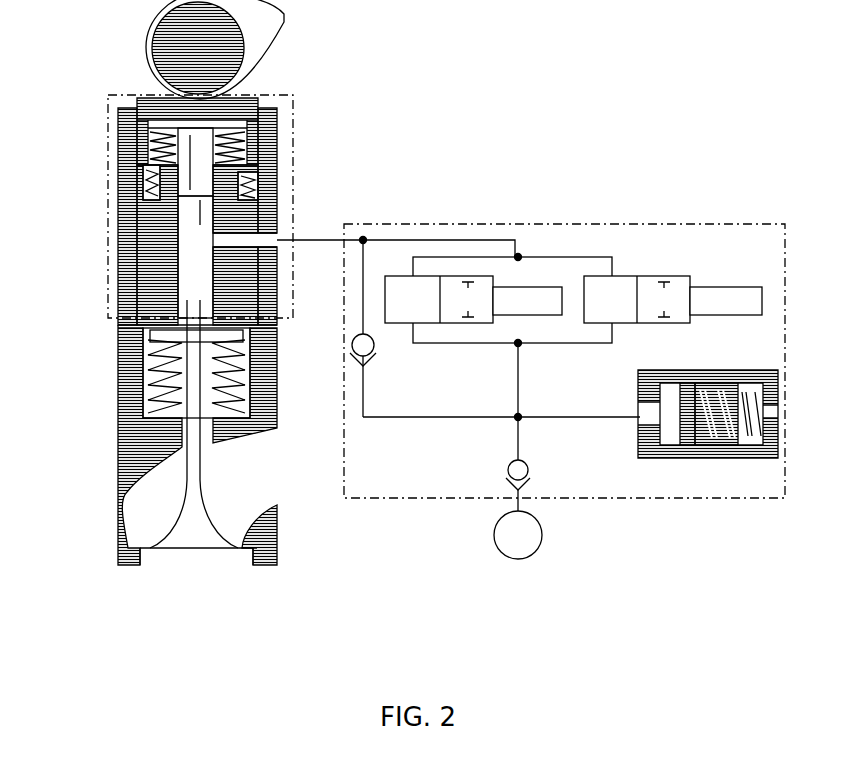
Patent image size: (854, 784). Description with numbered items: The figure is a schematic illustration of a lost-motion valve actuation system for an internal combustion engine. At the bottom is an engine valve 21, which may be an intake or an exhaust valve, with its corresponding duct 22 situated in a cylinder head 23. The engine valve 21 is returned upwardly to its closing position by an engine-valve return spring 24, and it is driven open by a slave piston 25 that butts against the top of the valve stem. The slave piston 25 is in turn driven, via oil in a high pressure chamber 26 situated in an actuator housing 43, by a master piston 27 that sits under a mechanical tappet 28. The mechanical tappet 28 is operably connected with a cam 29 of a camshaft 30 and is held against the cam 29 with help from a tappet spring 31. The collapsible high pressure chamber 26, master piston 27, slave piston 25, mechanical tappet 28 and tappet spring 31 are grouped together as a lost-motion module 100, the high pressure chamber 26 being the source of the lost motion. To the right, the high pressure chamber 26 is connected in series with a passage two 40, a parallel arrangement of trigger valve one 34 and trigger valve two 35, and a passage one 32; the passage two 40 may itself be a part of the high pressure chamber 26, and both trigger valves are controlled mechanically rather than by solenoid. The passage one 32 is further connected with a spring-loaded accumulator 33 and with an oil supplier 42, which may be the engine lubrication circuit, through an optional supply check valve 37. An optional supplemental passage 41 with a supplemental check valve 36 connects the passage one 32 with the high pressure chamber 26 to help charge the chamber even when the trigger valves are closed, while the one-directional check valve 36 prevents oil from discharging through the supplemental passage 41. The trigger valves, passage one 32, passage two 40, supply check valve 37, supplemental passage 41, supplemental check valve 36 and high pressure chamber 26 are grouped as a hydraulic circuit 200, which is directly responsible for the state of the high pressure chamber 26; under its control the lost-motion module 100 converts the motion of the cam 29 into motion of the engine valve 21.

The engine valve 21 is at (188, 556).
The duct 22 is at (272, 497).
The cylinder head 23 is at (140, 452).
The engine-valve return spring 24 is at (148, 406).
The slave piston 25 is at (192, 292).
The high pressure chamber 26 is at (190, 230).
The master piston 27 is at (188, 186).
The mechanical tappet 28 is at (135, 98).
The cam 29 is at (247, 38).
The camshaft 30 is at (172, 35).
The tappet spring 31 is at (155, 145).
The passage one 32 is at (520, 386).
The accumulator 33 is at (702, 367).
The trigger valve one 34 is at (448, 274).
The trigger valve two 35 is at (643, 274).
The supplemental check valve 36 is at (372, 346).
The supply check valve 37 is at (520, 478).
The passage two 40 is at (382, 240).
The supplemental passage 41 is at (383, 418).
The oil supplier 42 is at (506, 546).
The actuator housing 43 is at (130, 305).
The lost-motion module 100 is at (292, 172).
The hydraulic circuit 200 is at (549, 221).